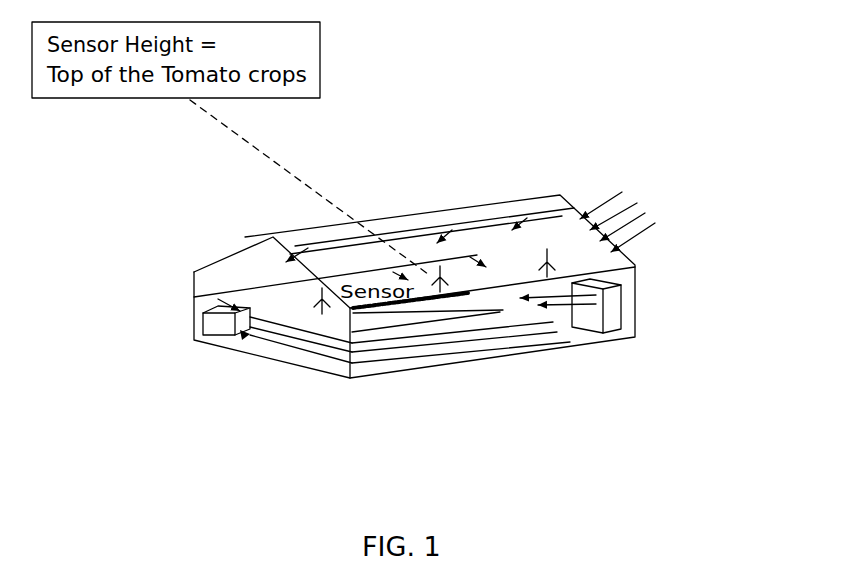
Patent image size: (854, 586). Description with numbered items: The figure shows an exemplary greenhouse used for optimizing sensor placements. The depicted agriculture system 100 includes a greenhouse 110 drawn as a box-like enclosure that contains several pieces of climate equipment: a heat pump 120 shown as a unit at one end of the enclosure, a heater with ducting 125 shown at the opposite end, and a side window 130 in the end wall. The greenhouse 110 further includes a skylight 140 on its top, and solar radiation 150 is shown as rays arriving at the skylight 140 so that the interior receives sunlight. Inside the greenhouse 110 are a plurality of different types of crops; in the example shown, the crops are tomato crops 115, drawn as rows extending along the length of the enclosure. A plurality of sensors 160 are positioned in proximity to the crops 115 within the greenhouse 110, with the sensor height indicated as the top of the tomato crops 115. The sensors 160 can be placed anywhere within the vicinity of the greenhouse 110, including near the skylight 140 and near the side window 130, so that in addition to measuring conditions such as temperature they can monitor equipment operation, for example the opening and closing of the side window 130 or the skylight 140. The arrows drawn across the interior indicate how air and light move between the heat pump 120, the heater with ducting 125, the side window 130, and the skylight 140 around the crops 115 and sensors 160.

The agriculture system 100 is at (590, 48).
The greenhouse 110 is at (467, 363).
The tomato crops 115 is at (320, 302).
The heat pump 120 is at (622, 306).
The heater with ducting 125 is at (246, 336).
The side window 130 is at (222, 322).
The skylight 140 is at (505, 205).
The solar radiation 150 is at (635, 210).
The sensors 160 is at (372, 300).